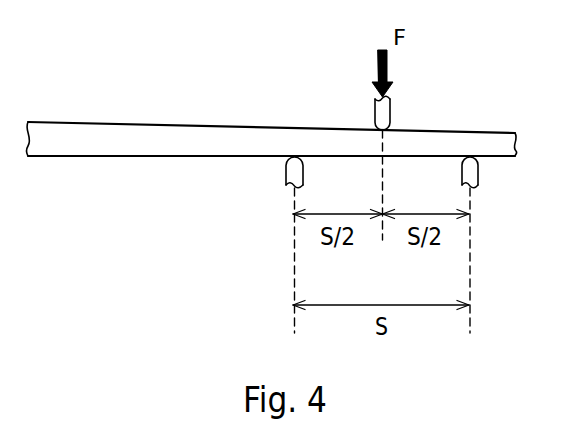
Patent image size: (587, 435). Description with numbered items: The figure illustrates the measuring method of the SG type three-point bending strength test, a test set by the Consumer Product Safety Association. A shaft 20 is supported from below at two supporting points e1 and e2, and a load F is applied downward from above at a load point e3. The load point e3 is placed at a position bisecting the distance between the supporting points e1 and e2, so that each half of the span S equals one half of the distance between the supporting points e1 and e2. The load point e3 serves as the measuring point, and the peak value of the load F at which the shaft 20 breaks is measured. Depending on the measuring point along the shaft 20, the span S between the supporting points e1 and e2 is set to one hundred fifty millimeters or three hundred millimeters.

The shaft 20 is at (145, 122).
The supporting point e1 is at (295, 157).
The supporting point e2 is at (468, 157).
The load point e3 is at (383, 130).